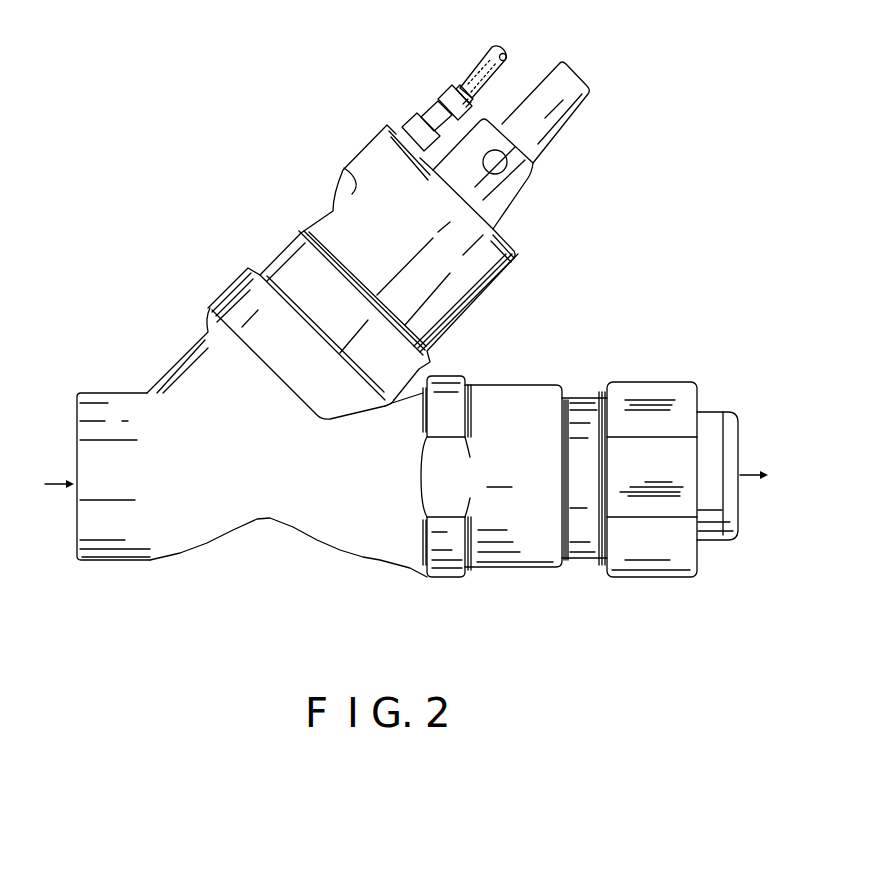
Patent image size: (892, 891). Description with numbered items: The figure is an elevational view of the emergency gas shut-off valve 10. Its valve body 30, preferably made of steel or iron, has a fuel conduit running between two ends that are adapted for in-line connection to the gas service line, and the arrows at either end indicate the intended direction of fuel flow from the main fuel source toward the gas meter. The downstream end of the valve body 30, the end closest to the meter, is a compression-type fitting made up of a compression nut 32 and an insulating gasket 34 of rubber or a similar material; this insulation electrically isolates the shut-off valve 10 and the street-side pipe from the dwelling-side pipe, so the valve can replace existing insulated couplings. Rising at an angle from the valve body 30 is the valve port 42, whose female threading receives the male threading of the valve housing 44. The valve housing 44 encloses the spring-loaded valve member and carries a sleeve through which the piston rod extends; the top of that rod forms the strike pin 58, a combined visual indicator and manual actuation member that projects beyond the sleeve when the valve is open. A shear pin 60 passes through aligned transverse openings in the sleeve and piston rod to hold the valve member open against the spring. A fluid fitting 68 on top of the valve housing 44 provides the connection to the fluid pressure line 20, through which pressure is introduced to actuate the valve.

The emergency gas shut-off valve 10 is at (260, 178).
The fluid pressure line 20 is at (468, 65).
The valve body 30 is at (143, 528).
The compression nut 32 is at (648, 382).
The insulating gasket 34 is at (712, 412).
The valve port 42 is at (230, 284).
The valve housing 44 is at (333, 211).
The strike pin 58 is at (568, 106).
The shear pin 60 is at (502, 167).
The fluid fitting 68 is at (437, 98).